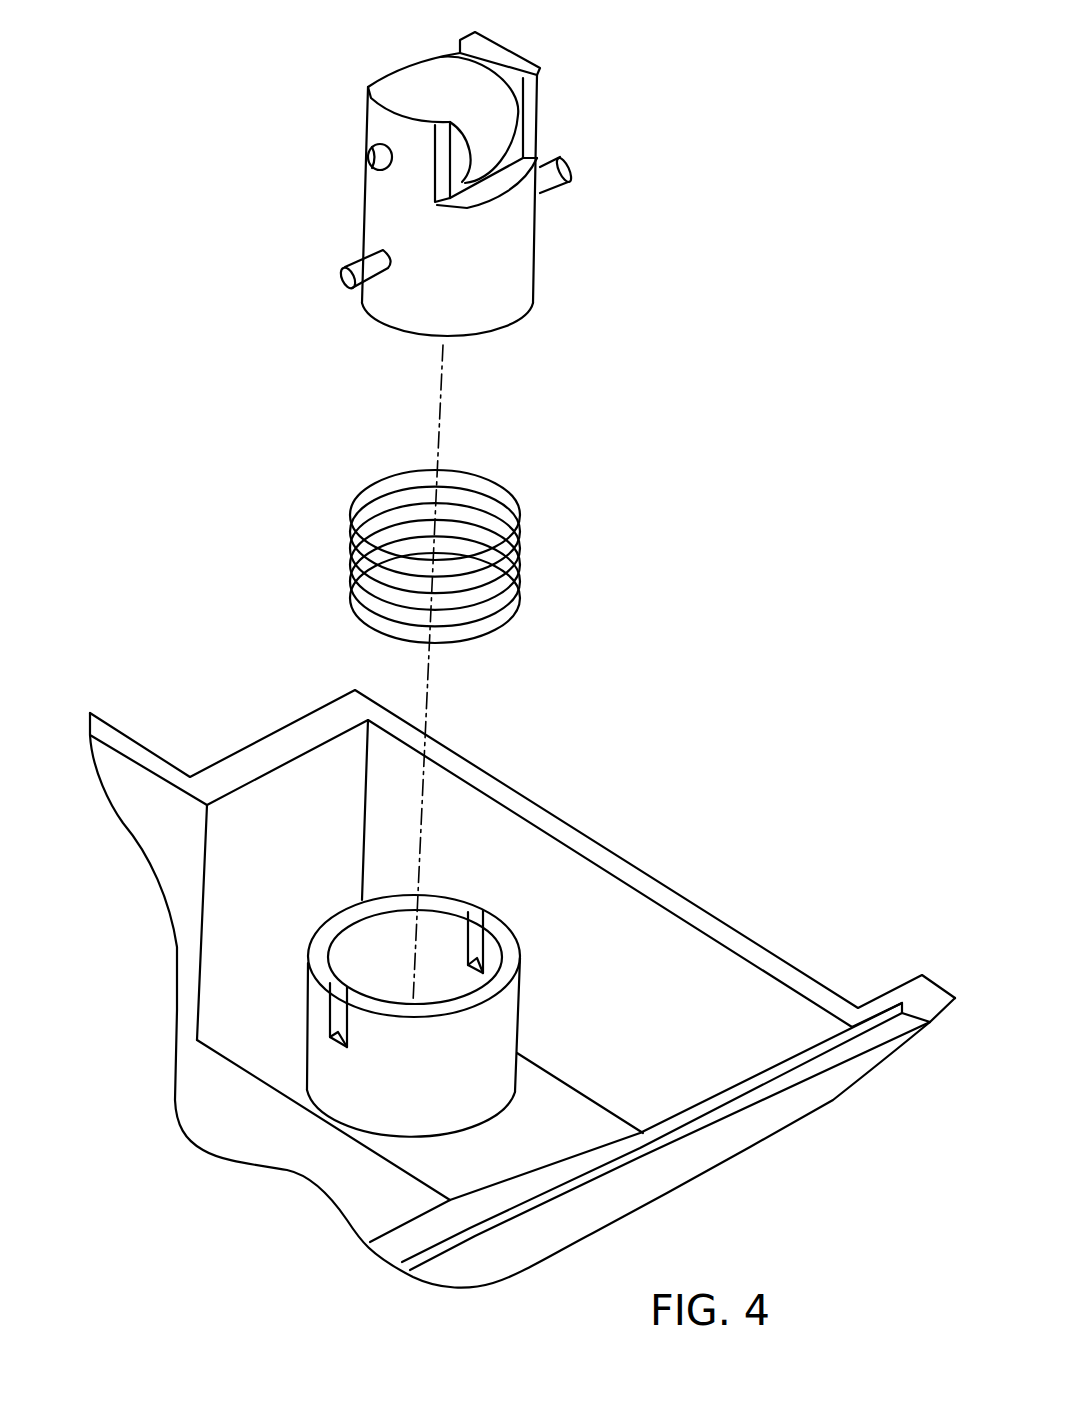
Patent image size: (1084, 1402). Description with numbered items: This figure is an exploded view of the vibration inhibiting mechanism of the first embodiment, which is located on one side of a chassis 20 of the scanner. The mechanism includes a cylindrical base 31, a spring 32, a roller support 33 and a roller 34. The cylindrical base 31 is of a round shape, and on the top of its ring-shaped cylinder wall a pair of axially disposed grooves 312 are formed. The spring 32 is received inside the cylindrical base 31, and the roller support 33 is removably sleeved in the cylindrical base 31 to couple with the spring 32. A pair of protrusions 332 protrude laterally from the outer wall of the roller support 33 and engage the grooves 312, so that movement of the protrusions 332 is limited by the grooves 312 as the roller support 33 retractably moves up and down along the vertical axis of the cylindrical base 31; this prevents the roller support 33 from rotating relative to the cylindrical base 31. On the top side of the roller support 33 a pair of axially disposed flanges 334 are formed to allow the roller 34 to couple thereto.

The chassis 20 is at (663, 927).
The cylindrical base 31 is at (508, 1032).
The grooves 312 is at (480, 923).
The spring 32 is at (517, 572).
The roller support 33 is at (513, 267).
The protrusions 332 is at (350, 263).
The flanges 334 is at (497, 53).
The roller 34 is at (440, 70).